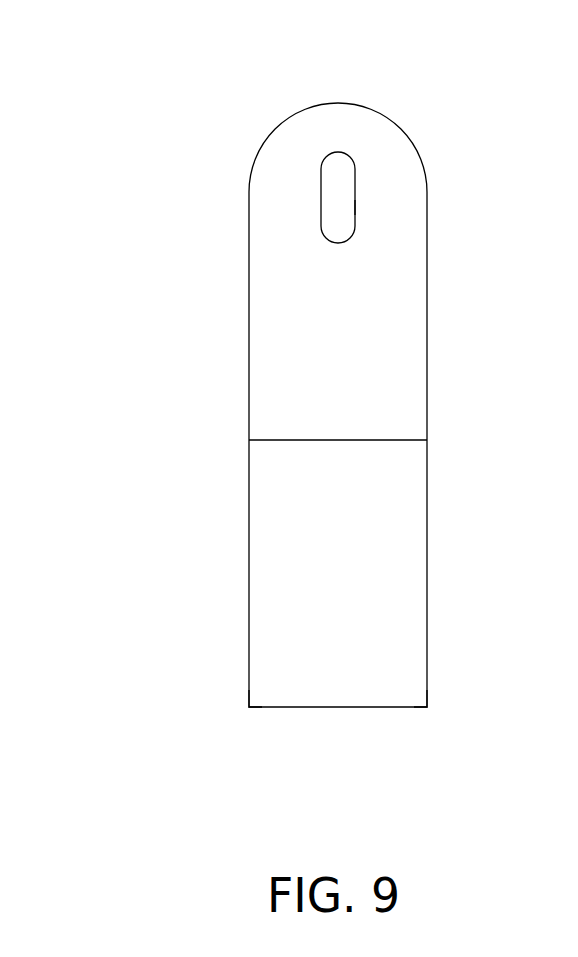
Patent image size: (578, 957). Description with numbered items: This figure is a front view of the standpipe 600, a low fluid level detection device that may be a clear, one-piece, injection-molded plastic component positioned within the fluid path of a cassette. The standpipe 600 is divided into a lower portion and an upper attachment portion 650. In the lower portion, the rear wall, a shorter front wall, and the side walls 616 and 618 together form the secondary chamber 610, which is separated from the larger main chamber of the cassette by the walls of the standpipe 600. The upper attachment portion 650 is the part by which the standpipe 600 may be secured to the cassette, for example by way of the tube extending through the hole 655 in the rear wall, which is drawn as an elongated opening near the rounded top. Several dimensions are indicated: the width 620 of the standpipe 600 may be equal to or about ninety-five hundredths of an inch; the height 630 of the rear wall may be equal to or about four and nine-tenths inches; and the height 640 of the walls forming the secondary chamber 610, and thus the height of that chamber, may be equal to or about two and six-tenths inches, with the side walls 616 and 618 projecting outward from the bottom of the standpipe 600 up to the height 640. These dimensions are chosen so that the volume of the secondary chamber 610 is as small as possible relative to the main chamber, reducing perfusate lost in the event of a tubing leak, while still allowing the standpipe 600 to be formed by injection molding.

The standpipe 600 is at (425, 76).
The secondary chamber 610 is at (370, 495).
The side wall 616 is at (248, 680).
The side wall 618 is at (427, 690).
The width 620 is at (427, 750).
The height 630 is at (215, 103).
The height 640 is at (462, 440).
The attachment portion 650 is at (388, 188).
The hole 655 is at (355, 215).